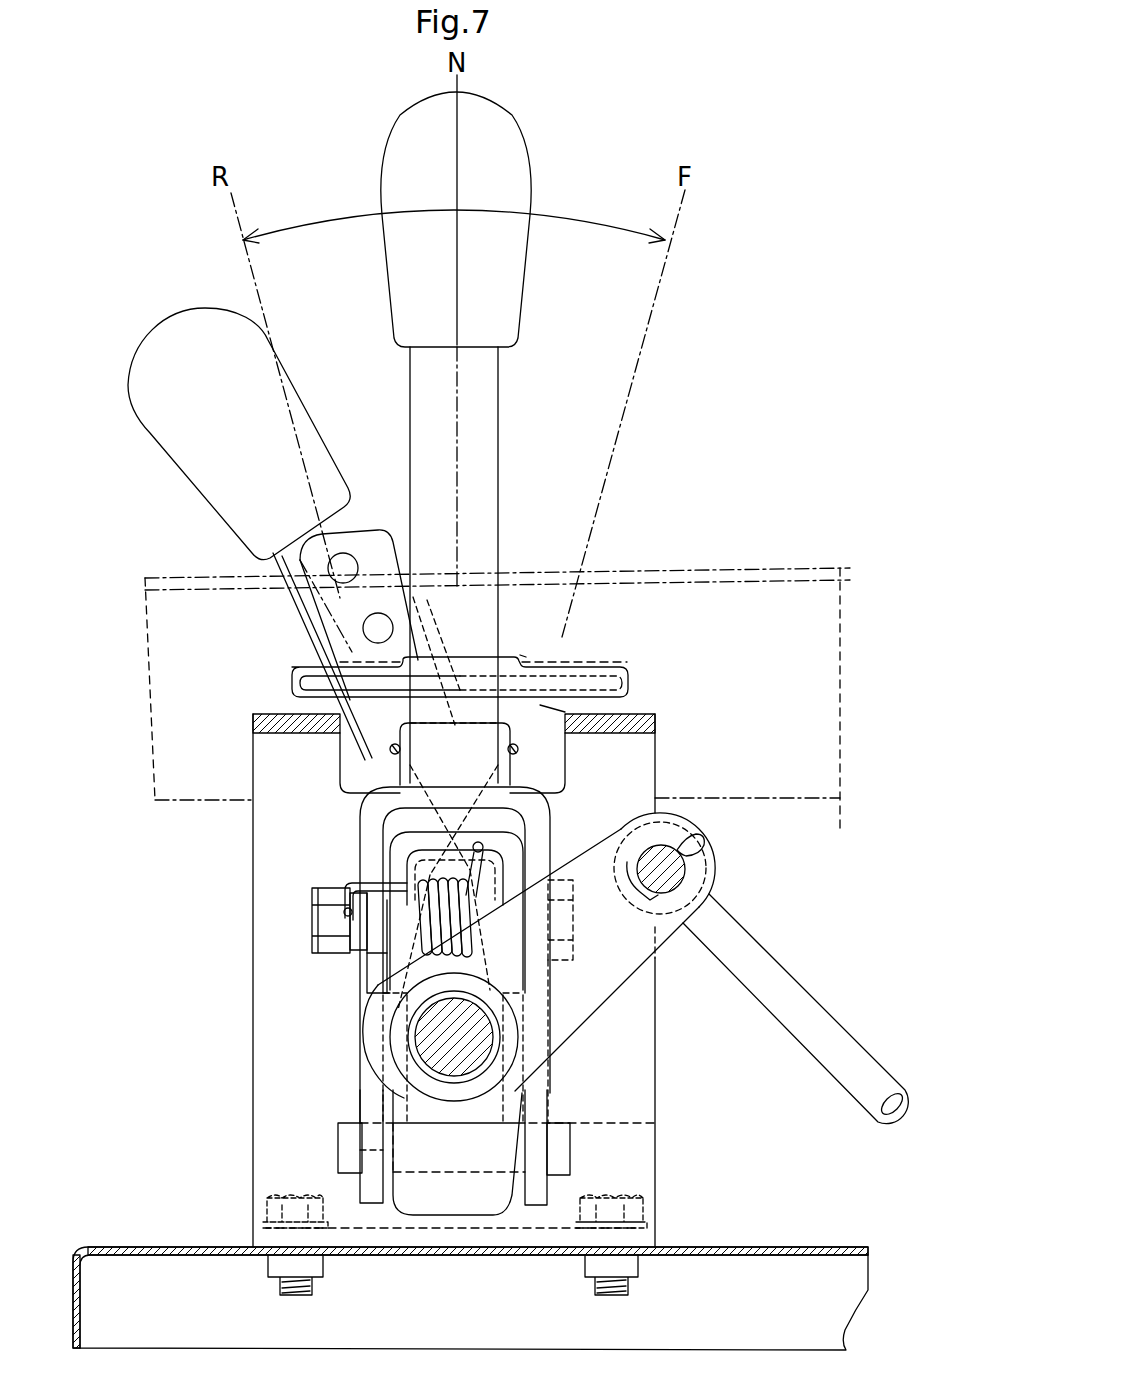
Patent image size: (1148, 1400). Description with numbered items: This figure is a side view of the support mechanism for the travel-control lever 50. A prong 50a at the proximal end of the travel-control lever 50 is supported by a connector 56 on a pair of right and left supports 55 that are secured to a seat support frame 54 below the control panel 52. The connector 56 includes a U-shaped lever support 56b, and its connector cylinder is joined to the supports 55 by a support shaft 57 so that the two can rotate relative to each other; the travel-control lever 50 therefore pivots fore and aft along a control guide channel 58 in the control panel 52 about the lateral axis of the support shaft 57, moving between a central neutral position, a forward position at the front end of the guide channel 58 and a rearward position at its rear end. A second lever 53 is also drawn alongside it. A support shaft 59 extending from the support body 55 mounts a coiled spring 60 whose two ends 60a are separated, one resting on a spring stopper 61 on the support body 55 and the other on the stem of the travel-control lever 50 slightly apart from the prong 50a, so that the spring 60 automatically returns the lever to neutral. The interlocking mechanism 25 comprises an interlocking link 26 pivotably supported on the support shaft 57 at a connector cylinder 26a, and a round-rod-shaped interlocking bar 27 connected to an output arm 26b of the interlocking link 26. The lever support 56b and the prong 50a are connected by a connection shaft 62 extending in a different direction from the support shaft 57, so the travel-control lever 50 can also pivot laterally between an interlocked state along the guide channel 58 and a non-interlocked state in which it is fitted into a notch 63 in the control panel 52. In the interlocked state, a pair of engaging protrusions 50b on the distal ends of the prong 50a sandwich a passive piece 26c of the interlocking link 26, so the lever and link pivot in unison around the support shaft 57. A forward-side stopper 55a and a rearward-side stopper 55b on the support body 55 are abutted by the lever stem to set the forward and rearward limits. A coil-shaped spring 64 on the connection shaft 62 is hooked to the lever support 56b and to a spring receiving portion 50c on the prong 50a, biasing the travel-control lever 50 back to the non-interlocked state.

The interlocking mechanism 25 is at (855, 1029).
The interlocking link 26 is at (607, 1003).
The connector cylinder 26a is at (517, 1030).
The output arm 26b is at (705, 872).
The passive piece 26c is at (458, 1200).
The interlocking bar 27 is at (812, 1037).
The travel-control lever 50 is at (512, 305).
The prong 50a is at (372, 838).
The engaging protrusions 50b is at (365, 1160).
The spring receiving portion 50c is at (377, 942).
The control panel 52 is at (703, 560).
The auxiliary lever knob 53 is at (175, 327).
The seat support frame 54 is at (120, 1245).
The support 55 is at (265, 1060).
The forward-side stopper 55a is at (558, 700).
The rearward-side stopper 55b is at (355, 693).
The connector 56 is at (397, 926).
The lever support 56b is at (267, 928).
The support shaft 57 is at (440, 1050).
The control guide channel 58 is at (630, 680).
The support shaft 59 is at (410, 880).
The coiled spring 60 is at (546, 851).
The spring ends 60a is at (390, 751).
The spring stopper 61 is at (517, 797).
The connection shaft 62 is at (312, 915).
The notch 63 is at (532, 665).
The coil-shaped spring 64 is at (343, 888).